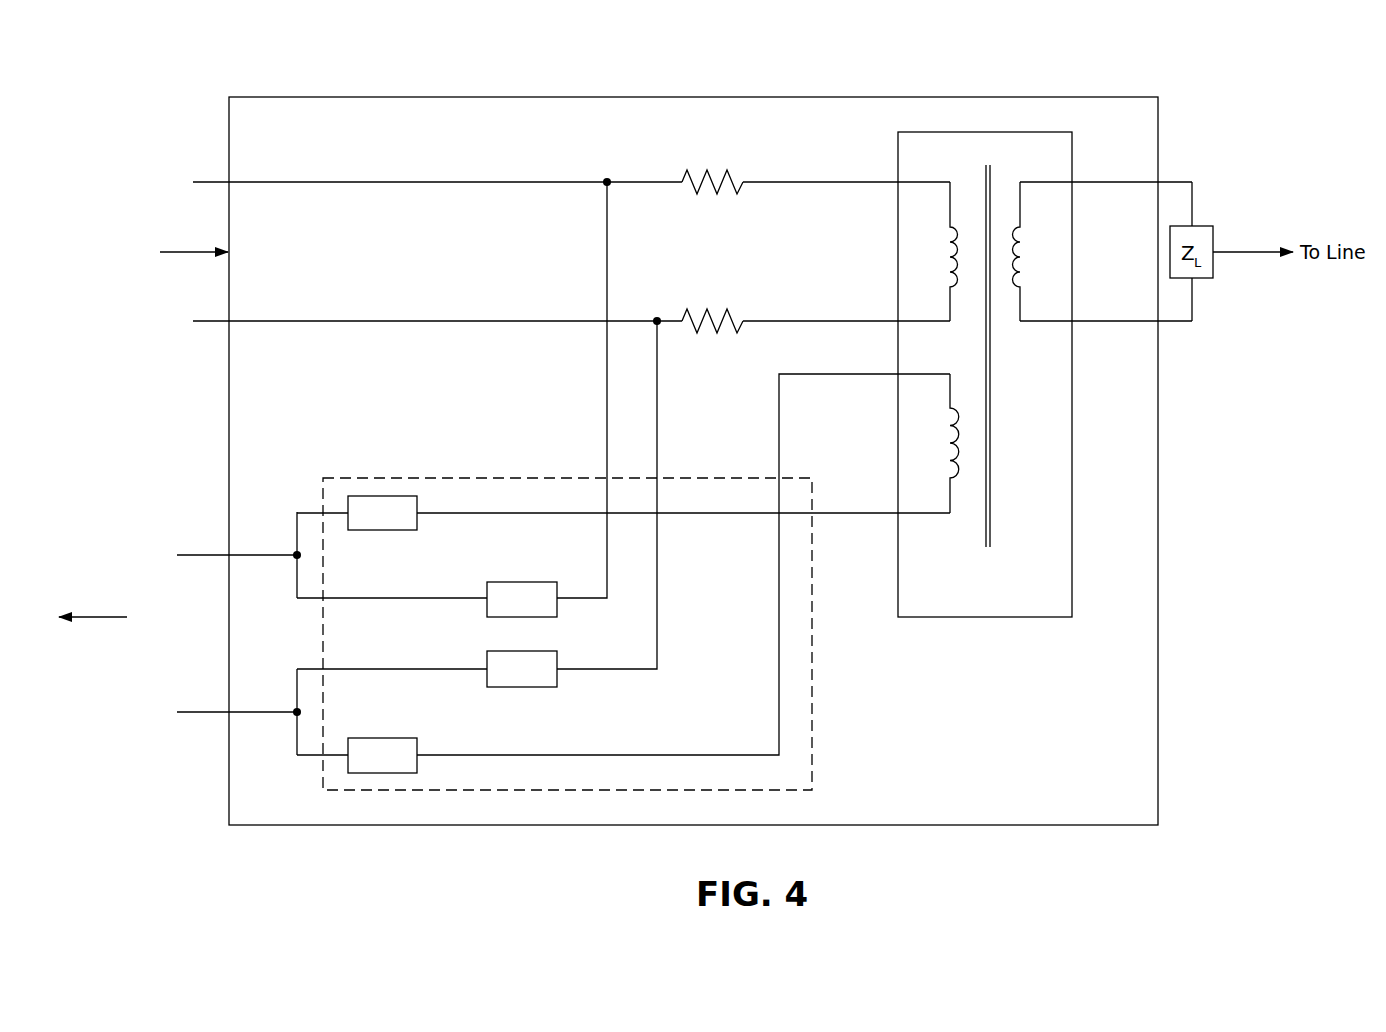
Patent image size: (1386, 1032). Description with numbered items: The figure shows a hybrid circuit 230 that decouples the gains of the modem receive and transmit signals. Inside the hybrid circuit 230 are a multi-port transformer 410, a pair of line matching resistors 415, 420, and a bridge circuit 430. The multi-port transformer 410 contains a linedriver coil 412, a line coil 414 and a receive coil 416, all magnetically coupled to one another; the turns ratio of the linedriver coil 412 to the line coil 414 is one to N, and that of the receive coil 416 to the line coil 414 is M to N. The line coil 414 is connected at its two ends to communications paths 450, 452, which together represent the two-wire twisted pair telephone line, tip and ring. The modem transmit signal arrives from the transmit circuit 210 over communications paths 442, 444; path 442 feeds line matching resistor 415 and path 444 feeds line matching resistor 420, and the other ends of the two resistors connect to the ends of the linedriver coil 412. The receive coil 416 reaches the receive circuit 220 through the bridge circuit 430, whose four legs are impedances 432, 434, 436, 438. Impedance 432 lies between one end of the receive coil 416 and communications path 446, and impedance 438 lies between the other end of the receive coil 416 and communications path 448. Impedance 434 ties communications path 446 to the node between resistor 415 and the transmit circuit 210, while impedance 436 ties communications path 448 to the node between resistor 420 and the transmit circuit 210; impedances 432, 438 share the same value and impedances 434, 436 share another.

The transmit circuit 210 is at (151, 252).
The receive circuit 220 is at (136, 633).
The hybrid circuit 230 is at (1158, 111).
The multi-port transformer 410 is at (1072, 152).
The linedriver coil 412 is at (950, 229).
The line coil 414 is at (1020, 229).
The line matching resistor 415 is at (712, 173).
The receive coil 416 is at (950, 412).
The line matching resistor 420 is at (712, 312).
The bridge circuit 430 is at (812, 656).
The impedance 432 is at (400, 496).
The impedance 434 is at (557, 582).
The impedance 436 is at (557, 651).
The impedance 438 is at (417, 738).
The communications path 442 is at (348, 182).
The communications path 444 is at (348, 321).
The communications path 446 is at (245, 555).
The communications path 448 is at (237, 712).
The communications path 450 is at (1175, 182).
The communications path 452 is at (1175, 321).